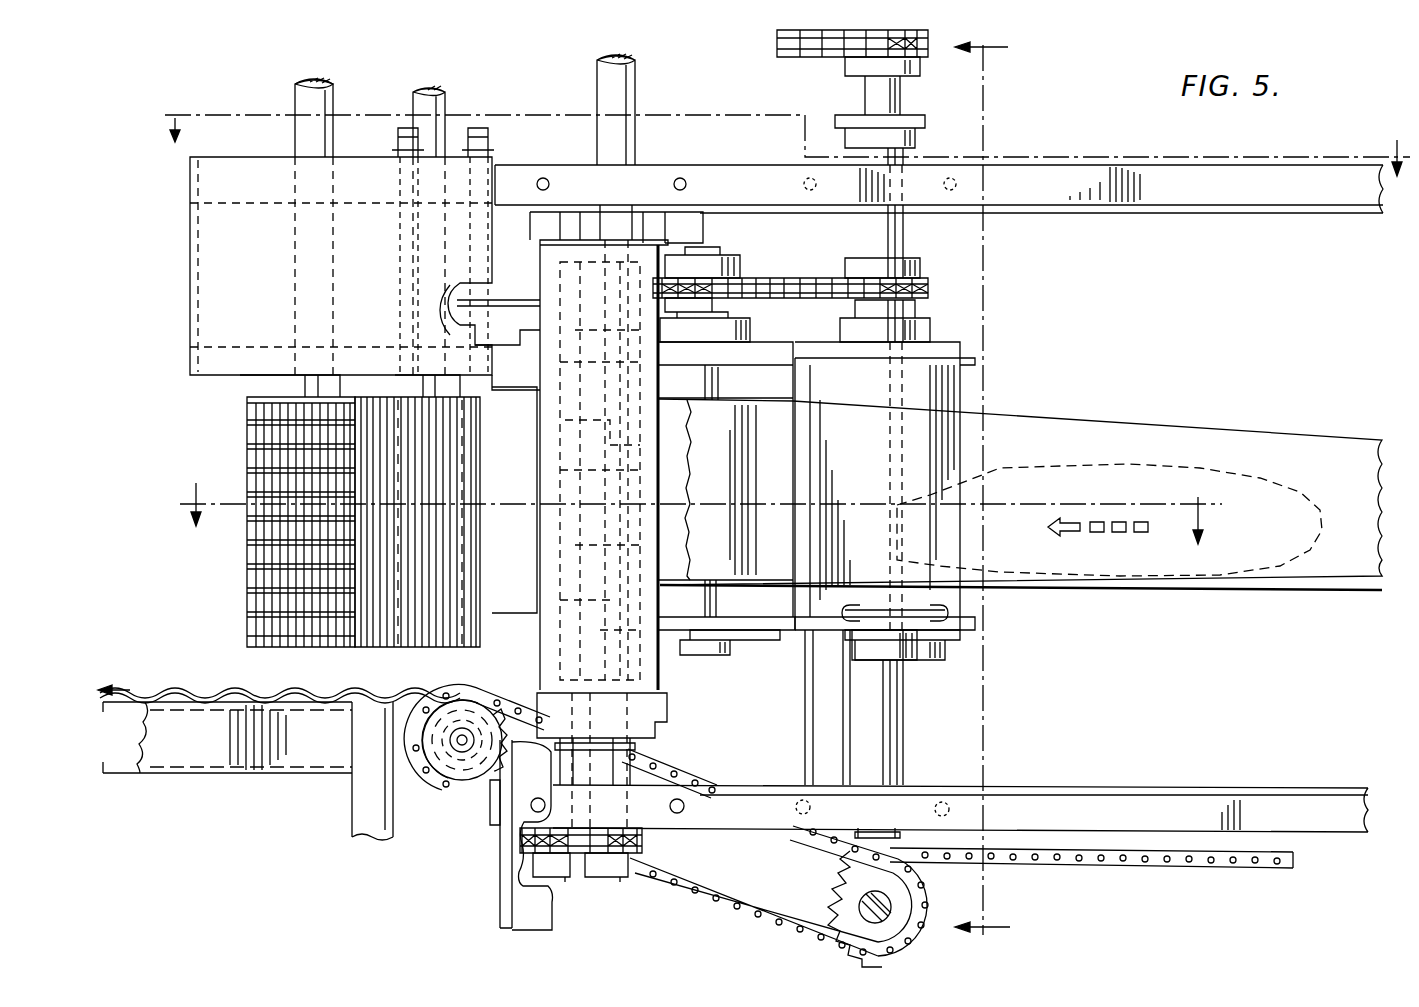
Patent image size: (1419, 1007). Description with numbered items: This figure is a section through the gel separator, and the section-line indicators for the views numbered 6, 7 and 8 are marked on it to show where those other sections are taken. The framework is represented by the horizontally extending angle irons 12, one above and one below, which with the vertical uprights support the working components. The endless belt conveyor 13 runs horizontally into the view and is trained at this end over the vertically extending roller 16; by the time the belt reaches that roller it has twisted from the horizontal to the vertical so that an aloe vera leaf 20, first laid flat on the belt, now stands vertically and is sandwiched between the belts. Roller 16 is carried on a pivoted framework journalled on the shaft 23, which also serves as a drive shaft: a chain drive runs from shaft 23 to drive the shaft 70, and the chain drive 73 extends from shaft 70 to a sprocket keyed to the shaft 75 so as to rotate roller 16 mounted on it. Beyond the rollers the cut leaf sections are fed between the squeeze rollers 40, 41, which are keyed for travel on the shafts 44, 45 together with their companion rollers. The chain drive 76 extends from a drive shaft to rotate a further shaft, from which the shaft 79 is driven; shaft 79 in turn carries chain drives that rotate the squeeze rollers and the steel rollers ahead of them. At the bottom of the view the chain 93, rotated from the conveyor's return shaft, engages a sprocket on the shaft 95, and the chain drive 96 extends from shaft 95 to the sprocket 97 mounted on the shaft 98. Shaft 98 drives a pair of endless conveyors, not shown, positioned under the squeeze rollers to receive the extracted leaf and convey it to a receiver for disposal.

The section line 6- 6 is at (777, 161).
The section line 7- 7 is at (688, 513).
The section line 8- 8 is at (980, 488).
The angle irons 12 is at (1200, 192).
The endless belt conveyor 13 is at (1281, 440).
The vertically extending roller 16 is at (728, 483).
The aloe vera leaf 20 is at (1082, 560).
The shaft 23 is at (898, 233).
The squeeze roller 40 is at (259, 645).
The squeeze roller 41 is at (398, 647).
The shaft 44 is at (293, 140).
The shaft 45 is at (411, 112).
The shaft 70 is at (887, 728).
The chain drive 73 is at (793, 278).
The shaft 75 is at (714, 380).
The chain drive 76 is at (803, 54).
The shaft 79 is at (633, 154).
The chain 93 is at (1110, 863).
The shaft 95 is at (870, 899).
The chain drive 96 is at (690, 907).
The sprocket 97 is at (472, 762).
The shaft 98 is at (460, 733).